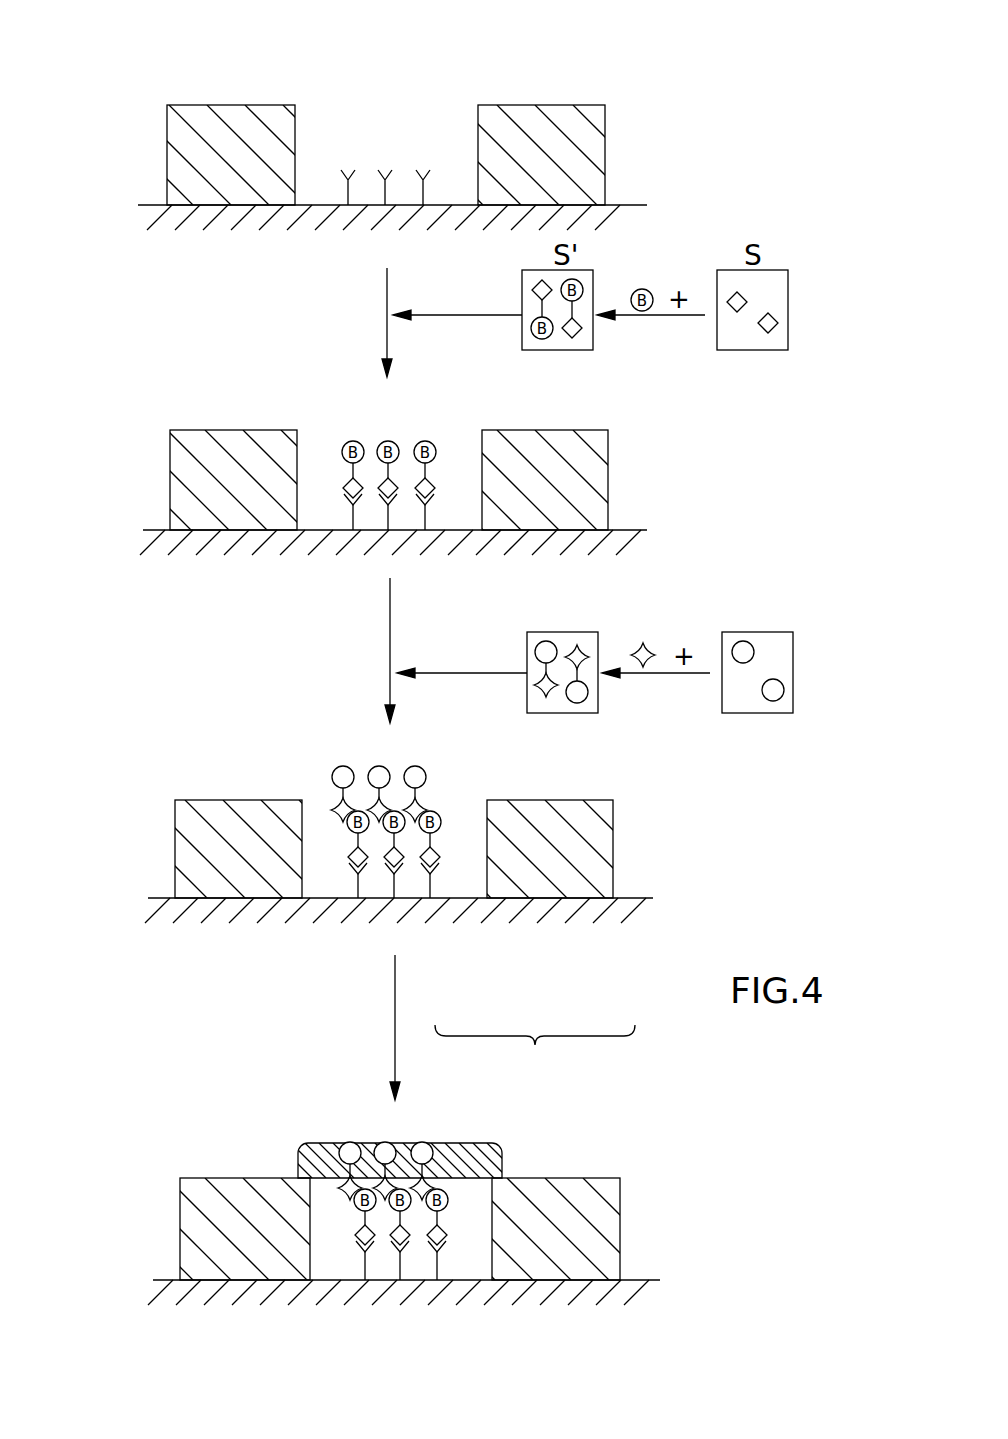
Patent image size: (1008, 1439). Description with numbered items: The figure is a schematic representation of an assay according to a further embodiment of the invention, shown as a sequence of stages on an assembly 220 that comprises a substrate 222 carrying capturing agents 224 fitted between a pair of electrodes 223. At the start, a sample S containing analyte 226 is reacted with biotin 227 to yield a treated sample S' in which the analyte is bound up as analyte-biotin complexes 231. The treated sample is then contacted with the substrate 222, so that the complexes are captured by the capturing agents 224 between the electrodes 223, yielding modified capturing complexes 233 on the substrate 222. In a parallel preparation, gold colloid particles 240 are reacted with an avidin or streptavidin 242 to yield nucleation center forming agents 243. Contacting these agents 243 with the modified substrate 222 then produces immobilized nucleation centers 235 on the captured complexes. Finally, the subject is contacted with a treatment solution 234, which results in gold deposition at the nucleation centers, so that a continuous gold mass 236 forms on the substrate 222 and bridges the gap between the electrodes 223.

The sensor structure 220 is at (140, 75).
The substrate 222 is at (253, 210).
The electrodes 223 is at (237, 118).
The capturing agents 224 is at (347, 172).
The analyte 226 is at (773, 318).
The biotin 227 is at (641, 288).
The analyte-biotin complexes 231 is at (540, 285).
The modified capturing complexes 233 is at (404, 424).
The treatment solution 234 is at (535, 1030).
The immobilized nucleation centers 235 is at (440, 790).
The continuous gold mass 236 is at (452, 1143).
The gold colloid particles 240 is at (750, 643).
The avidin or streptavidin 242 is at (637, 642).
The nucleation center forming agents 243 is at (553, 643).